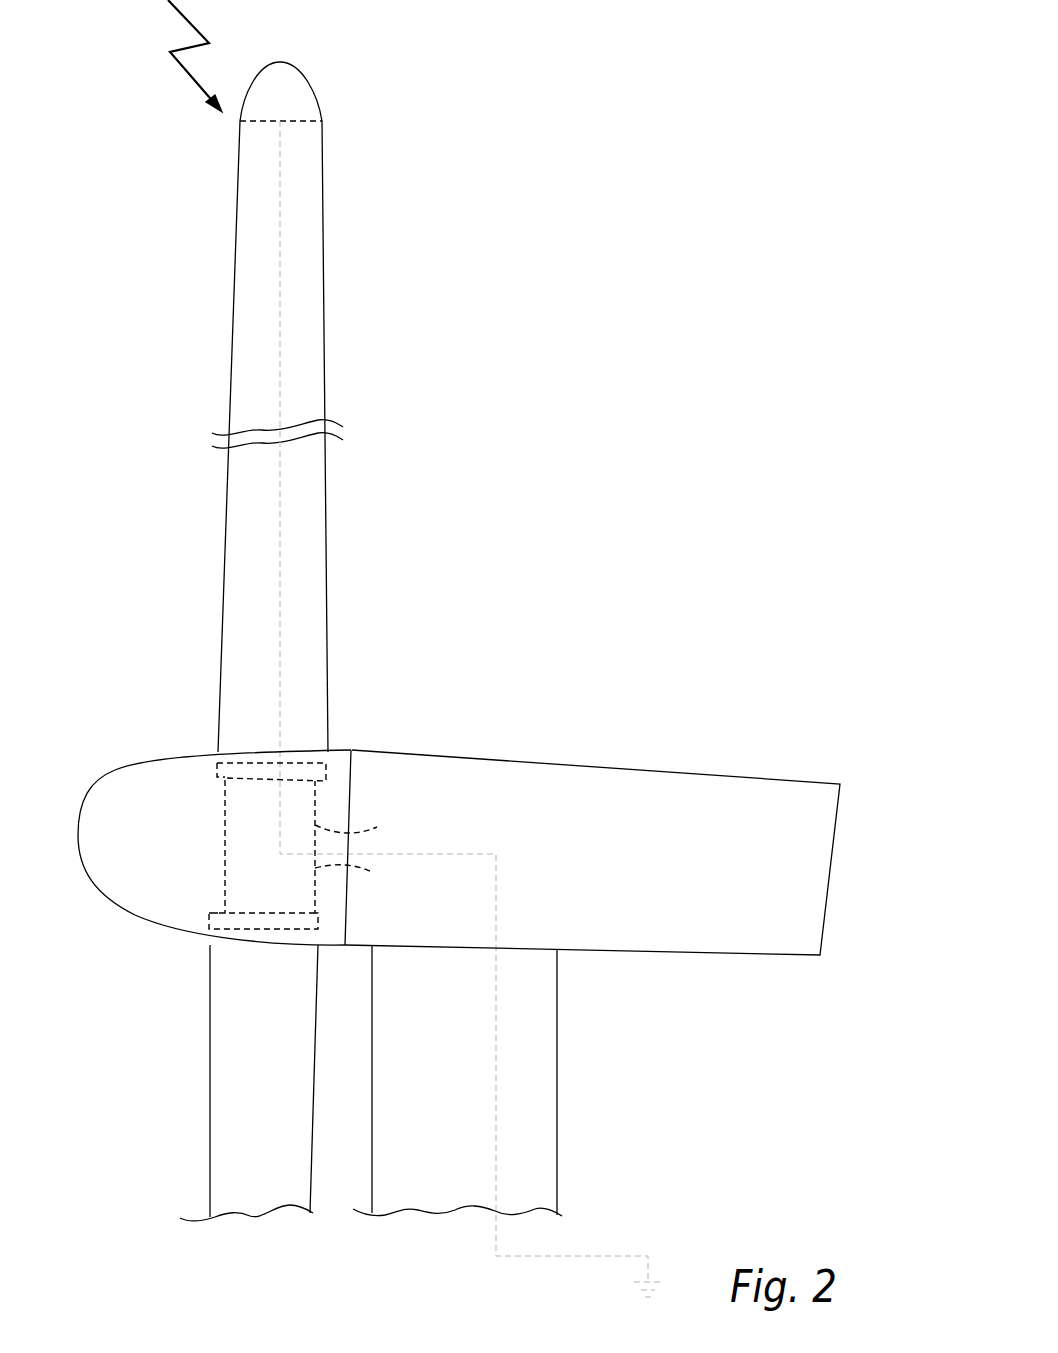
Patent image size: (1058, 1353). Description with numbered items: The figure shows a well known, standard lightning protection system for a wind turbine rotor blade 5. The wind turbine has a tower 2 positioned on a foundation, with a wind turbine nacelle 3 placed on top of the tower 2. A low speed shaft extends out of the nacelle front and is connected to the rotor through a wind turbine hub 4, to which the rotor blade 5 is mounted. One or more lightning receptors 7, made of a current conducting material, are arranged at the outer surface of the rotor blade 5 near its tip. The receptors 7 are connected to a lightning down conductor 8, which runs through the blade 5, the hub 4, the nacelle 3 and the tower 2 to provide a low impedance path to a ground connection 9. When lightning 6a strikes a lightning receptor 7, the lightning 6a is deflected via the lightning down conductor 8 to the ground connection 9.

The tower 2 is at (557, 1047).
The wind turbine nacelle 3 is at (703, 770).
The wind turbine hub 4 is at (168, 755).
The rotor blade 5 is at (232, 310).
The lightning 6a is at (209, 43).
The lightning receptor 7 is at (322, 121).
The lightning down conductor 8 is at (282, 300).
The ground connection 9 is at (660, 1275).